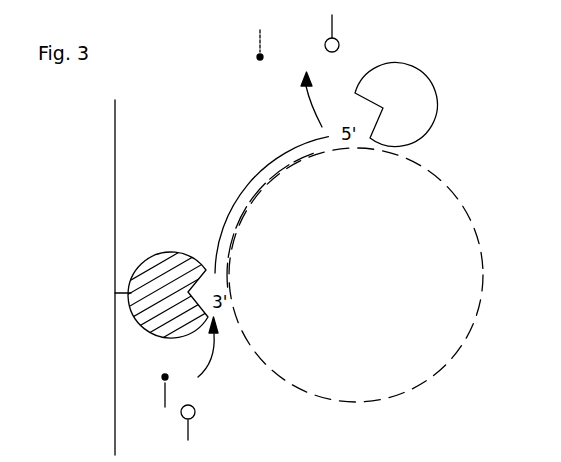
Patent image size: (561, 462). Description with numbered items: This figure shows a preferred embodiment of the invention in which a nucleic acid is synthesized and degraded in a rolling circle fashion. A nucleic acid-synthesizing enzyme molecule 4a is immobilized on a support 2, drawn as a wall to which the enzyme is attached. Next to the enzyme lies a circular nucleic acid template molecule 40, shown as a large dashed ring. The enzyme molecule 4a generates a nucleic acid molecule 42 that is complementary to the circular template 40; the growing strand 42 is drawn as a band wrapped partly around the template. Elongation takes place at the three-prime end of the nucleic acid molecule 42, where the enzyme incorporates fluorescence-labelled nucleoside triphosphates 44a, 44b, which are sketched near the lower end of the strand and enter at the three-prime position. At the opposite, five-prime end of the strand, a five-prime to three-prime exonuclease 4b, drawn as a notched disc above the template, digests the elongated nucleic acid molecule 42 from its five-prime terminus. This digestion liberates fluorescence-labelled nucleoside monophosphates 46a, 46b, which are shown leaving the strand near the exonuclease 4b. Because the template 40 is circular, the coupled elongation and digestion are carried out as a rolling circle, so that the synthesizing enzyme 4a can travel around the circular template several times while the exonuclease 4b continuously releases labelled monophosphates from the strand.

The support 2 is at (105, 412).
The nucleic acid-synthesizing enzyme molecule 4a is at (132, 253).
The 5'→3' exonuclease 4b is at (442, 82).
The circular nucleic acid template molecule 40 is at (328, 162).
The nucleic acid molecule 42 is at (250, 167).
The fluorescence-labelled nucleoside triphosphate 44a is at (188, 390).
The fluorescence-labelled nucleoside triphosphate 44b is at (211, 427).
The fluorescence-labelled nucleoside monophosphate 46a is at (284, 45).
The fluorescence-labelled nucleoside monophosphate 46b is at (354, 34).